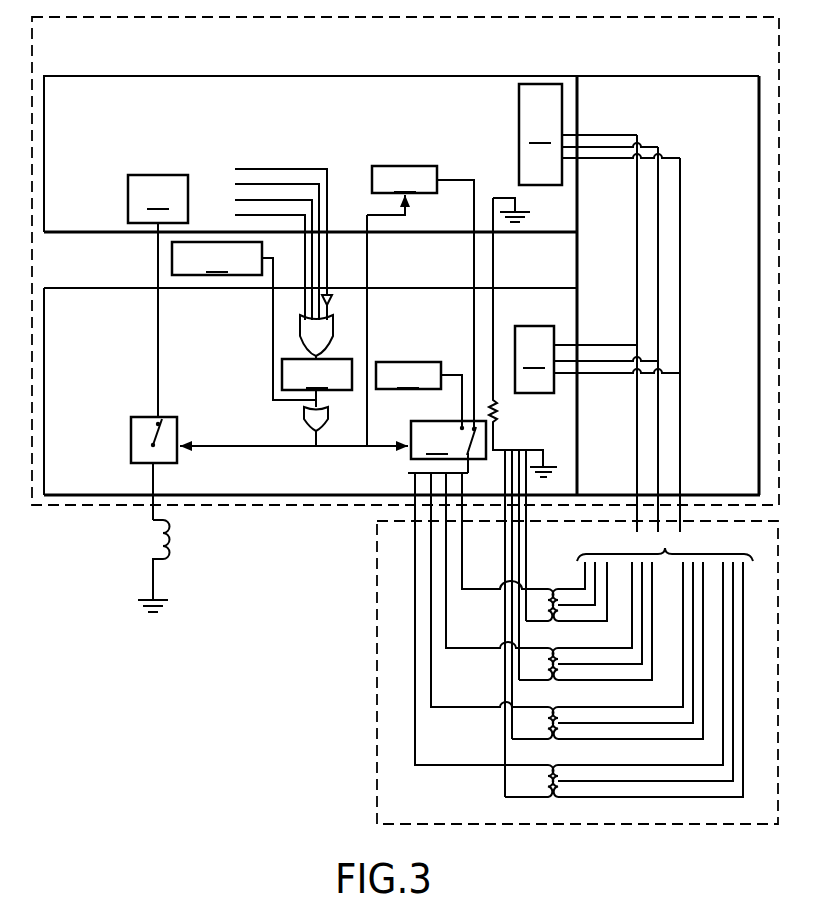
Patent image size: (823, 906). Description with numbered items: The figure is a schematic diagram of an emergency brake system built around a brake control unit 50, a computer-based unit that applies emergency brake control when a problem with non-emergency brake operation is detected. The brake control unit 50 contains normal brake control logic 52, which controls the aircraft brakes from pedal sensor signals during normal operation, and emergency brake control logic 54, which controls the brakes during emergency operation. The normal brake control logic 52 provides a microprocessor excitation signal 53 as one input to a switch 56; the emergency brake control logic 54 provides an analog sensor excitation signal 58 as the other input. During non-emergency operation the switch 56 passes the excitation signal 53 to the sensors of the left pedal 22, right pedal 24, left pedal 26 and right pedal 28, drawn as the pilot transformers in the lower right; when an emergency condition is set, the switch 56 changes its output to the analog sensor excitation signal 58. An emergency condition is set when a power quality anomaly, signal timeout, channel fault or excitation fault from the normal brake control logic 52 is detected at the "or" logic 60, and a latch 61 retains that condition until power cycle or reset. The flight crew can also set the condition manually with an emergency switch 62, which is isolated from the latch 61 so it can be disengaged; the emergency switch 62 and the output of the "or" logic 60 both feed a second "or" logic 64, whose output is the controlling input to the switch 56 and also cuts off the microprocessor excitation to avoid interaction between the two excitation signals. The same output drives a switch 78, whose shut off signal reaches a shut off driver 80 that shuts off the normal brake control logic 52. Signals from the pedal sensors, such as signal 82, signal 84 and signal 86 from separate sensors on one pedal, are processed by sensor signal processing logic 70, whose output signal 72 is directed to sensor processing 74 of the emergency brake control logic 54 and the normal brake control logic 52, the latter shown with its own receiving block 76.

The left pedal 22 is at (528, 636).
The right pedal 24 is at (528, 694).
The left pedal 26 is at (528, 753).
The right pedal 28 is at (528, 811).
The brake control unit 50 is at (204, 752).
The normal brake control logic 52 is at (233, 90).
The excitation signal 53 is at (420, 306).
The emergency brake control logic 54 is at (201, 489).
The switch 56 is at (467, 593).
The analog sensor excitation signal 58 is at (419, 395).
The "or" logic 60 is at (300, 323).
The latch 61 is at (317, 381).
The emergency switch 62 is at (244, 321).
The second "or" logic 64 is at (306, 424).
The sensor signal processing logic 70 is at (668, 549).
The output signal 72 is at (684, 412).
The sensor processing 74 is at (597, 359).
The driver 76 is at (599, 134).
The switch 78 is at (139, 437).
The shut off driver 80 is at (158, 296).
The signal 82 is at (723, 704).
The signal 84 is at (733, 751).
The signal 86 is at (743, 794).